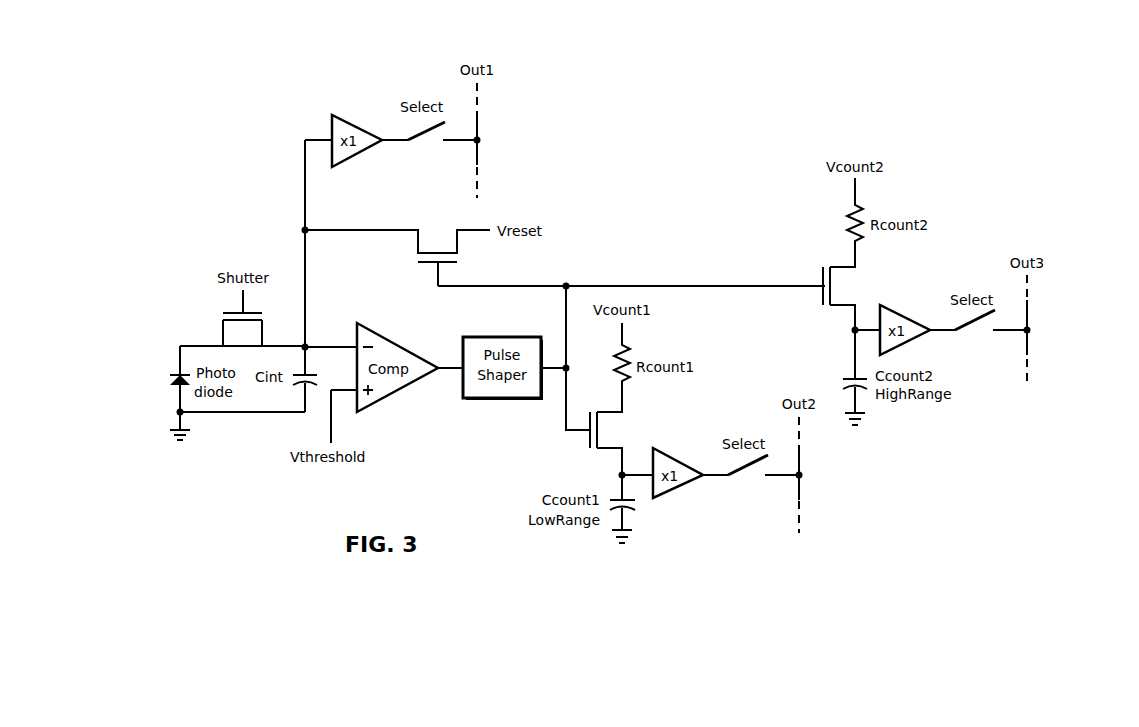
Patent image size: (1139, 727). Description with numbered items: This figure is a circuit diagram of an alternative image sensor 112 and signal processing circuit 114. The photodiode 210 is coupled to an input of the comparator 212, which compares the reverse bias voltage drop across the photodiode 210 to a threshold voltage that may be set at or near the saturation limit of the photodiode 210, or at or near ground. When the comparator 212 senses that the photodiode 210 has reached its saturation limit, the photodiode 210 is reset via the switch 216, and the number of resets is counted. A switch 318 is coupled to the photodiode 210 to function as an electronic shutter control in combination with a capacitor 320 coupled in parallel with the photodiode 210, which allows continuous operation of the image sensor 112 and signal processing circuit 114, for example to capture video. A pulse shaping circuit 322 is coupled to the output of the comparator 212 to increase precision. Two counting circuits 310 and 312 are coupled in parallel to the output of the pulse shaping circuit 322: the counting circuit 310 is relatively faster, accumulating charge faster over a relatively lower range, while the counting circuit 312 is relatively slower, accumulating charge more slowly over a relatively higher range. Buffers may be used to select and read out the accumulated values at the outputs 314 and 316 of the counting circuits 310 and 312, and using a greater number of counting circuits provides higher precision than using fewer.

The image sensor 112 is at (157, 434).
The signal processing circuit 114 is at (764, 112).
The photodiode 210 is at (175, 377).
The comparator 212 is at (400, 340).
The switch 216 is at (479, 118).
The counting circuit 310 is at (751, 528).
The counting circuit 312 is at (978, 247).
The Out2 output node 314 is at (802, 460).
The Out3 output node 316 is at (1030, 316).
The switch 318 is at (243, 300).
The integration capacitor Cint 320 is at (310, 372).
The pulse shaping circuit 322 is at (503, 337).